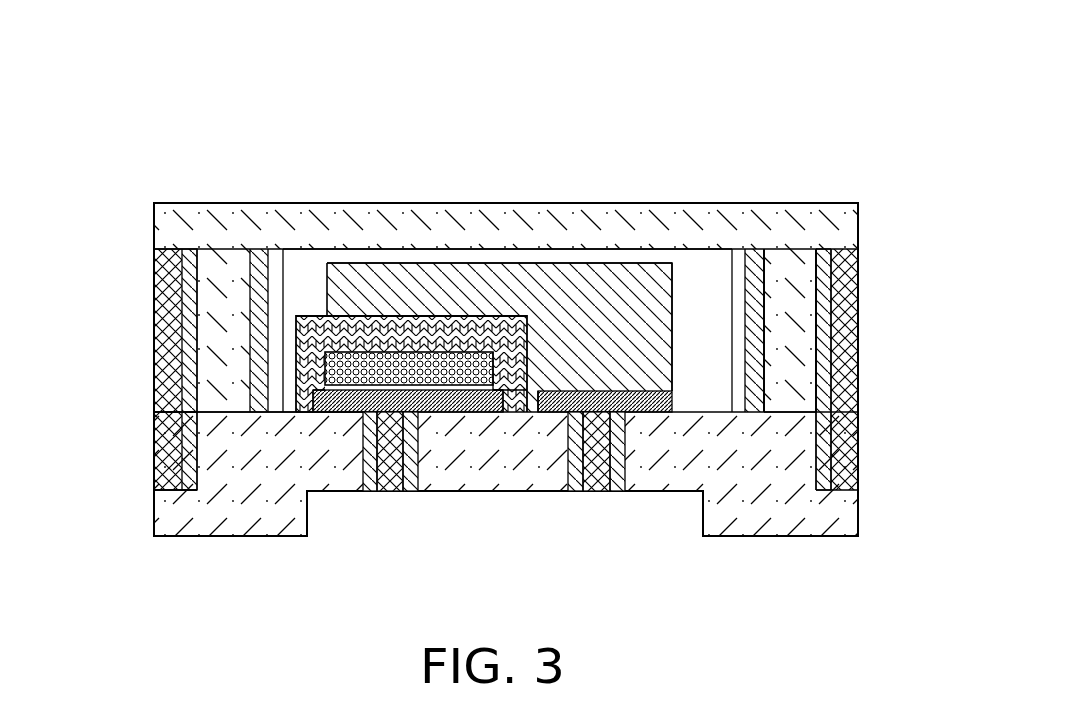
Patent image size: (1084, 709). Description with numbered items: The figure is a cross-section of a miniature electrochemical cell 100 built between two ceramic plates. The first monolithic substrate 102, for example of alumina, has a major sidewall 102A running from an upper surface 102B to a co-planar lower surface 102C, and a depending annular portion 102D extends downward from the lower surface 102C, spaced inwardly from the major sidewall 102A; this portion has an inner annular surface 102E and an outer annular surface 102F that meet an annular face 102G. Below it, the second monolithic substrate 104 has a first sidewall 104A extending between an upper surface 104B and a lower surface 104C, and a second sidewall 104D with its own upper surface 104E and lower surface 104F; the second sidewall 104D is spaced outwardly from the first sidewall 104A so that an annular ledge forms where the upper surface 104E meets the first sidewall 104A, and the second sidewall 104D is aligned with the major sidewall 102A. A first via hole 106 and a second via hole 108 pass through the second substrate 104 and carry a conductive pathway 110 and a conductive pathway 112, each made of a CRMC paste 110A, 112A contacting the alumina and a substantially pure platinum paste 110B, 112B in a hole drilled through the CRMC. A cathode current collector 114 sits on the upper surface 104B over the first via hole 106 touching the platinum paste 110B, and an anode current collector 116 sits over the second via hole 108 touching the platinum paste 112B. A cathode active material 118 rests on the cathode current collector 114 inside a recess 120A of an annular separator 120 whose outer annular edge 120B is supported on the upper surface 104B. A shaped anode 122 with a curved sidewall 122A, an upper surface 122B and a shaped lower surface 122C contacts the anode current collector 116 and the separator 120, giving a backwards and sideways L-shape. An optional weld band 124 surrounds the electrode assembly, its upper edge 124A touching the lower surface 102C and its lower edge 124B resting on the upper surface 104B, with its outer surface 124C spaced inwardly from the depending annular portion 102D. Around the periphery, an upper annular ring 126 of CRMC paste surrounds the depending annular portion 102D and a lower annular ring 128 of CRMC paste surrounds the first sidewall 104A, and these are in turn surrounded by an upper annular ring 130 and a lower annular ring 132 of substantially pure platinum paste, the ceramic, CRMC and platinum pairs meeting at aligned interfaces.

The miniature electrochemical cell 100 is at (682, 138).
The first monolithic substrate 102 is at (190, 214).
The major sidewall 102A is at (153, 232).
The upper surface 102B is at (266, 203).
The lower surface 102C is at (168, 265).
The depending annular portion 102D is at (800, 310).
The inner annular surface 102E is at (763, 355).
The outer annular surface 102F is at (817, 387).
The annular face 102G is at (794, 413).
The second monolithic substrate 104 is at (280, 500).
The first sidewall 104A is at (157, 437).
The upper surface 104B is at (210, 412).
The lower surface 104C is at (342, 493).
The second sidewall 104D is at (153, 517).
The upper surface 104E is at (157, 478).
The lower surface 104F is at (202, 537).
The first via hole 106 is at (418, 493).
The second via hole 108 is at (567, 492).
The conductive pathway 110 is at (393, 500).
The CRMC paste 110A is at (408, 493).
The platinum paste 110B is at (383, 493).
The conductive pathway 112 is at (593, 500).
The CRMC paste 112A is at (615, 491).
The platinum paste 112B is at (600, 491).
The cathode current collector 114 is at (508, 357).
The anode current collector 116 is at (633, 390).
The cathode active material 118 is at (437, 345).
The separator 120 is at (468, 357).
The recess 120A is at (393, 318).
The outer annular edge 120B is at (303, 414).
The shaped anode 122 is at (607, 268).
The curved sidewall 122A is at (750, 323).
The upper surface 122B is at (650, 262).
The shaped lower surface 122C is at (652, 393).
The weld band 124 is at (757, 298).
The upper edge 124A is at (757, 237).
The lower edge 124B is at (752, 413).
The outer surface 124C is at (765, 278).
The upper annular ring of CRMC paste 126 is at (269, 262).
The lower annular ring of CRMC paste 128 is at (157, 417).
The upper annular ring of platinum paste 130 is at (163, 357).
The lower annular ring of platinum paste 132 is at (162, 468).